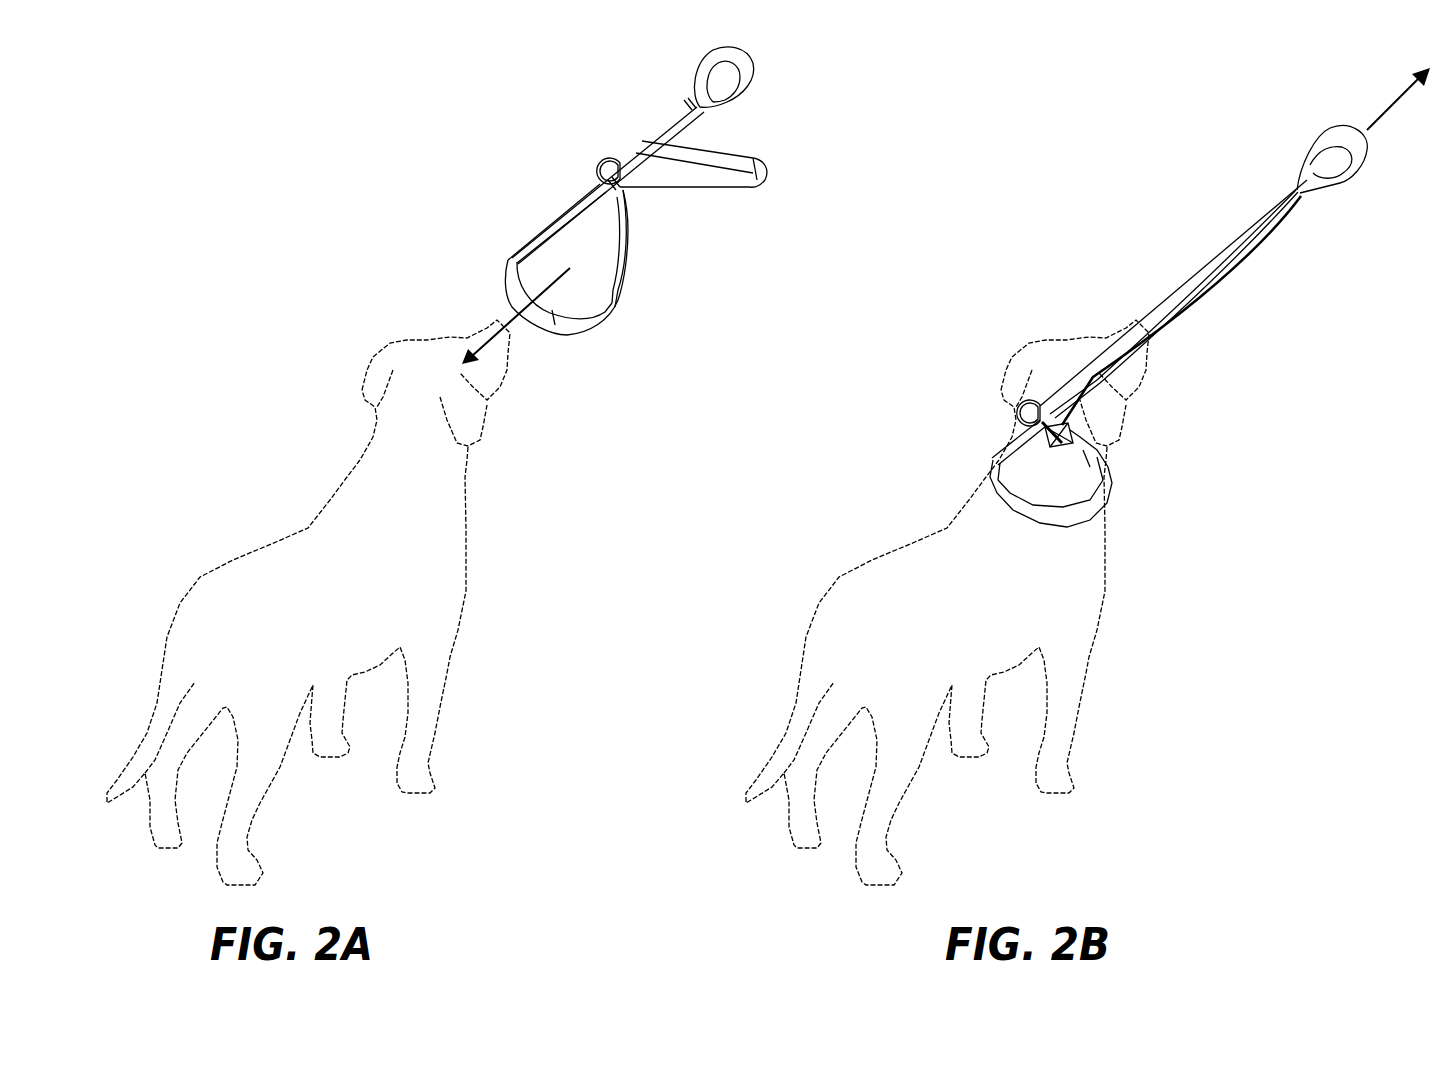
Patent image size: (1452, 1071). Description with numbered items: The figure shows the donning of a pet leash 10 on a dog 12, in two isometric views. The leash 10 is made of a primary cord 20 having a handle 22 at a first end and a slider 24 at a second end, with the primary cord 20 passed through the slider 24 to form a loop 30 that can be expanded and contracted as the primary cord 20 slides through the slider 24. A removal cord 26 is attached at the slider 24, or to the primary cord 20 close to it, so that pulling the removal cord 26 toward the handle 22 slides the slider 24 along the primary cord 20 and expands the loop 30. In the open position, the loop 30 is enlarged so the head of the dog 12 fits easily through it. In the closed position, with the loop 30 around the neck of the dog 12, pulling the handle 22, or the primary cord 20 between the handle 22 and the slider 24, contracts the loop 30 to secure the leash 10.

In FIG. 2A, the leash 10 is at (462, 125).
In FIG. 2B, the leash 10 is at (1121, 131).
In FIG. 2A, the dog 12 is at (274, 534).
In FIG. 2B, the dog 12 is at (894, 540).
In FIG. 2A, the primary cord 20 is at (657, 122).
In FIG. 2B, the primary cord 20 is at (1180, 285).
In FIG. 2A, the handle 22 is at (710, 60).
In FIG. 2B, the handle 22 is at (1320, 148).
In FIG. 2A, the slider 24 is at (593, 169).
In FIG. 2B, the slider 24 is at (1017, 408).
In FIG. 2A, the removal cord 26 is at (767, 163).
In FIG. 2A, the loop 30 is at (600, 363).
In FIG. 2B, the loop 30 is at (1080, 527).